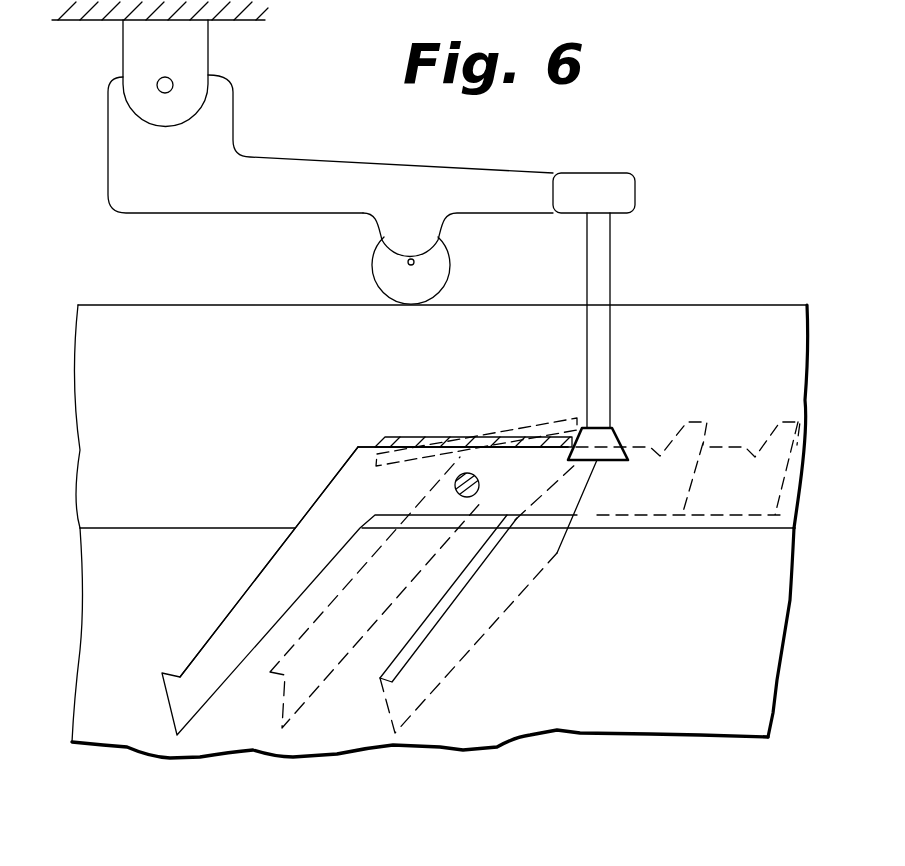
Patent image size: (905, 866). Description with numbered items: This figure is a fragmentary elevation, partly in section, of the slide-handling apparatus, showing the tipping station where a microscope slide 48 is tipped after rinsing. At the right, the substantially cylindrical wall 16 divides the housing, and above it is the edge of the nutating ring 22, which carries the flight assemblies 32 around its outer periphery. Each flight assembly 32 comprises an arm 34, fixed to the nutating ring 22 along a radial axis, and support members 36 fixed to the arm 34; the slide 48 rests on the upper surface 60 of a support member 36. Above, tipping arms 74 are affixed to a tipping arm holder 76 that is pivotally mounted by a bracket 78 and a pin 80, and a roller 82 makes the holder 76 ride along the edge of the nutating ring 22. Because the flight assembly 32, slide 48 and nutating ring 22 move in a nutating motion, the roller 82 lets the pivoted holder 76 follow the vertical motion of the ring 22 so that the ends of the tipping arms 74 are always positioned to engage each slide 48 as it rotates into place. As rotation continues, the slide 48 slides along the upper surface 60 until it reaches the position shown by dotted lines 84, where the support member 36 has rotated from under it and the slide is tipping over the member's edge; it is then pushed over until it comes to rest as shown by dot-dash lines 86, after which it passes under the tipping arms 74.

The cylindrical wall 16 is at (778, 713).
The nutating ring 22 is at (757, 313).
The flight assembly 32 is at (268, 561).
The arm 34 is at (479, 480).
The support member 36 is at (215, 634).
The microscope slide 48 is at (412, 437).
The upper surface 60 is at (358, 447).
The tipping arm 74 is at (612, 357).
The tipping arm holder 76 is at (570, 172).
The bracket 78 is at (122, 46).
The pin 80 is at (166, 77).
The roller 82 is at (440, 277).
The dotted lines 84 is at (527, 428).
The dot-dash lines 86 is at (461, 592).